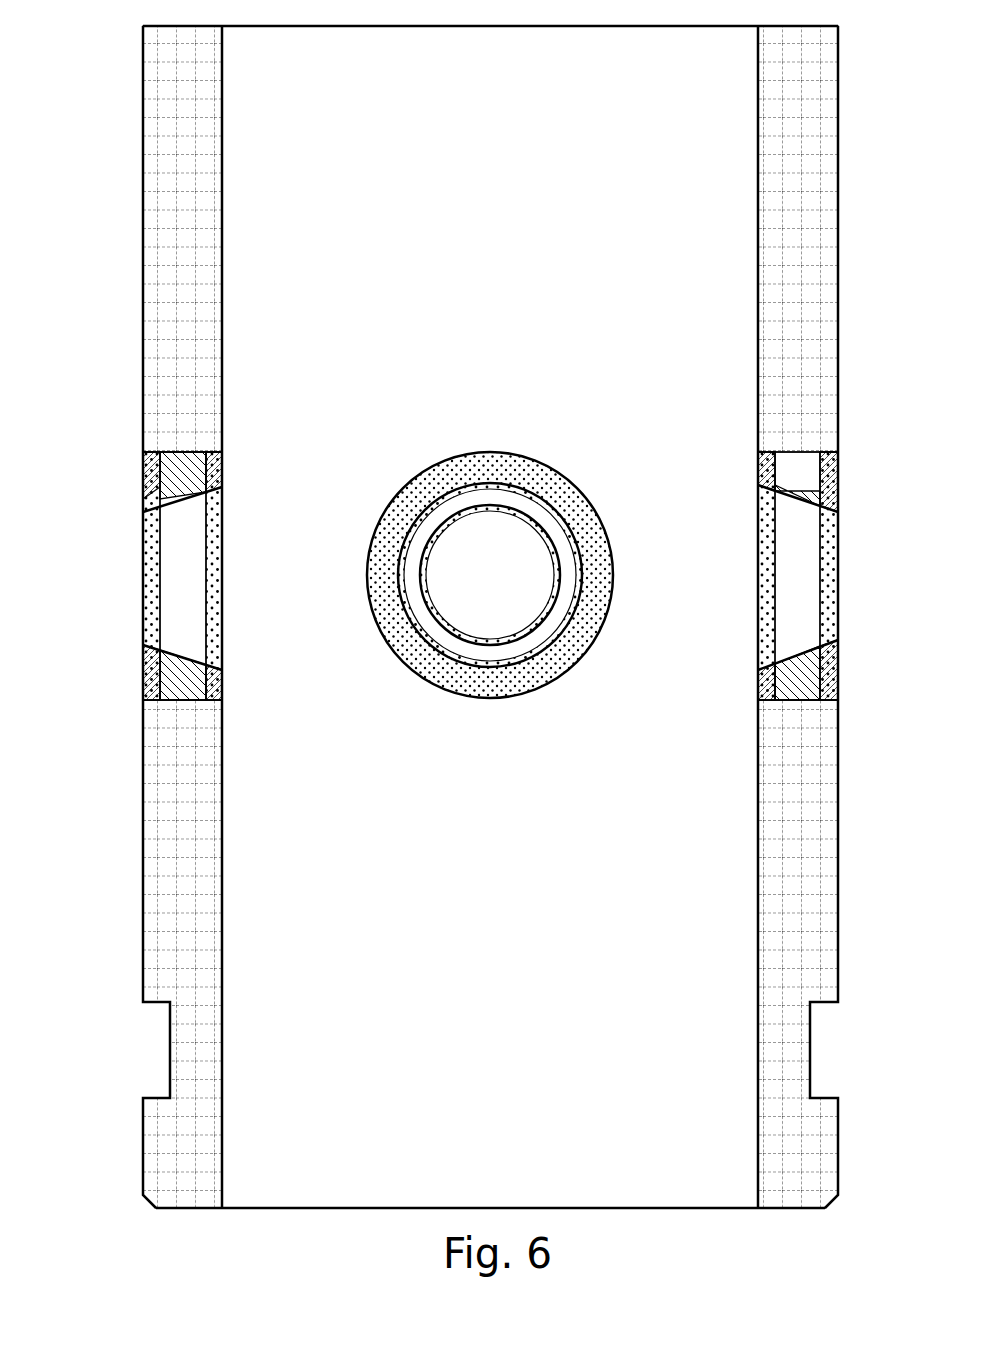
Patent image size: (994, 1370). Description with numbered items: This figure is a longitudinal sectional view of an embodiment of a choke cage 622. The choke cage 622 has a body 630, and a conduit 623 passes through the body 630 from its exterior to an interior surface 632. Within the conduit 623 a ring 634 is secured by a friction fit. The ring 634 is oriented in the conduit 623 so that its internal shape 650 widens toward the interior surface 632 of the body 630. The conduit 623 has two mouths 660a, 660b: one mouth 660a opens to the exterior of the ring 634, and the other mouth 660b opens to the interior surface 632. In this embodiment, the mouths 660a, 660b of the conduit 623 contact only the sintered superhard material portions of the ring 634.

The choke cage 622 is at (127, 163).
The conduit 623 is at (183, 700).
The body 630 is at (798, 200).
The interior surface 632 is at (603, 226).
The ring 634 is at (178, 676).
The internal shape 650 is at (180, 652).
The mouth 660a is at (145, 453).
The mouth 660b is at (222, 453).